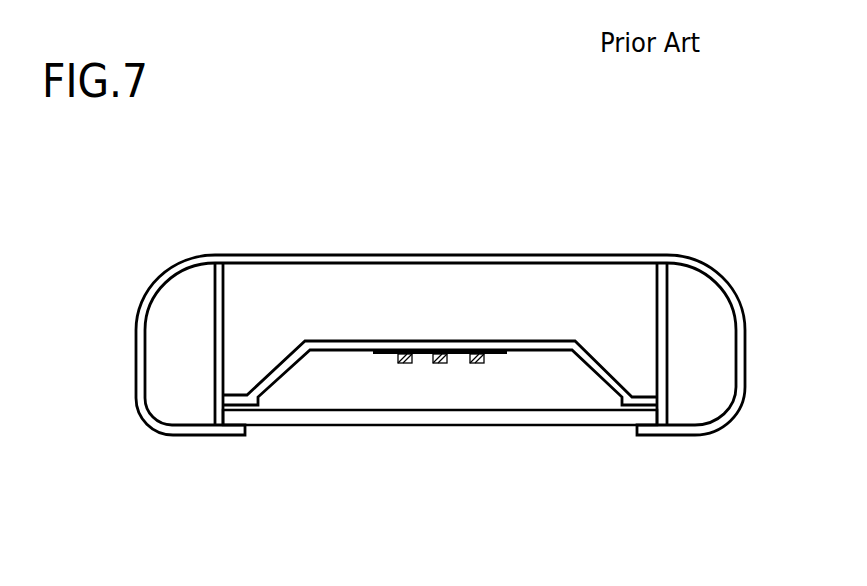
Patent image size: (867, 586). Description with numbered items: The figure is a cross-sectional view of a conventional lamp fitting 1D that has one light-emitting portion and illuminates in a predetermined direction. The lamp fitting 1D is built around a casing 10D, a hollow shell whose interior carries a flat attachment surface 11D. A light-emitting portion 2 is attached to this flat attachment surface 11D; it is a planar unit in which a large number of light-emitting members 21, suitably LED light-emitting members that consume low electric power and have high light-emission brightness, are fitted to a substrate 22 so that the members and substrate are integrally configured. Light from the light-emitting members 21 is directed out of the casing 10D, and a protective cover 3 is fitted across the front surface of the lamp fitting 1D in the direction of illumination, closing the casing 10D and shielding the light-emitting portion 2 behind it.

The lamp fitting 1D is at (668, 213).
The casing 10D is at (574, 257).
The flat attachment surface 11D is at (548, 353).
The protective cover 3 is at (283, 418).
The light-emitting portion 2 is at (505, 502).
The light-emitting members 21 is at (405, 363).
The substrate 22 is at (497, 363).